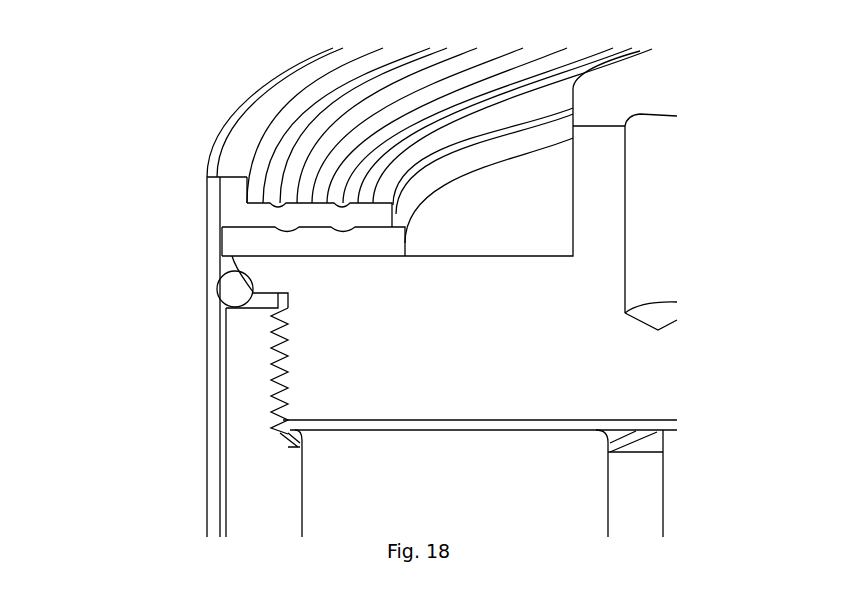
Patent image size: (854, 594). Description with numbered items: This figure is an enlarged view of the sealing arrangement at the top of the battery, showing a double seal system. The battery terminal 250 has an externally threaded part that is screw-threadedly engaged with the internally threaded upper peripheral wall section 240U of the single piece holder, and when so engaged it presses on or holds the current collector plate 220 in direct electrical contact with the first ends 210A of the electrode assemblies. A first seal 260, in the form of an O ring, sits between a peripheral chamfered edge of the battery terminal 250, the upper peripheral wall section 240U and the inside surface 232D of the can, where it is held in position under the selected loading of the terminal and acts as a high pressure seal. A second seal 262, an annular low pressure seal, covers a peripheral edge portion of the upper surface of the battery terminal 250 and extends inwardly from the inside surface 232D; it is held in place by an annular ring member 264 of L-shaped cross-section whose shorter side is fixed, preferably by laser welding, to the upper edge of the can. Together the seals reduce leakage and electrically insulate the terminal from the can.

The annular ring member 264 is at (233, 212).
The second seal 262 is at (248, 242).
The first seal 260 is at (233, 290).
The inside surface of the can 232D is at (228, 363).
The battery terminal 250 is at (463, 340).
The current collector plate 220 is at (587, 425).
The upper peripheral wall section 240U is at (288, 477).
The first ends of the electrode assemblies 210A is at (487, 476).